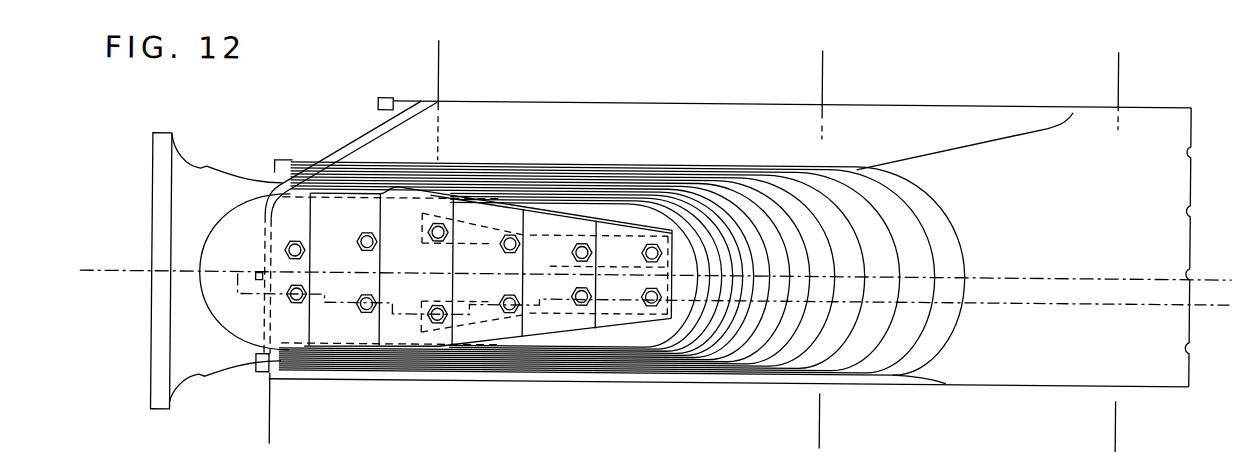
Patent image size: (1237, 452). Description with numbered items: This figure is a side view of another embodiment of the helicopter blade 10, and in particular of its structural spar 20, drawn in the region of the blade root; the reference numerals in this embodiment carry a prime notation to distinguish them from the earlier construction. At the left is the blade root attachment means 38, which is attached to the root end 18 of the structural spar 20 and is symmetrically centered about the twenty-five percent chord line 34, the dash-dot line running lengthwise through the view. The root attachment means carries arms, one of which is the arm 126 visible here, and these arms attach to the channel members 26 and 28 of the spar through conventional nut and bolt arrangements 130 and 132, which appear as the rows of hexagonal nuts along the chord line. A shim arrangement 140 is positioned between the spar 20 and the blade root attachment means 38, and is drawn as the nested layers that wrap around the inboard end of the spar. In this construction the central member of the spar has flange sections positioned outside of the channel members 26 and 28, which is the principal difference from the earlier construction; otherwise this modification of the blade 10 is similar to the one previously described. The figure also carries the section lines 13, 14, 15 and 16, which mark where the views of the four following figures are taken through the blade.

The helicopter blade 10 is at (890, 86).
The root end of structural spar 18 is at (402, 130).
The structural spar 20 is at (962, 115).
The channel member 26 is at (532, 111).
The channel member 28 is at (1010, 368).
The 25% chord line 34 is at (392, 270).
The blade root attachment means 38 is at (157, 184).
The arm 126 is at (423, 208).
The nut and bolt arrangement 130 is at (452, 238).
The nut and bolt arrangement 132 is at (520, 246).
The shim arrangement 140 is at (940, 222).
The section line 13— 13 is at (109, 279).
The section line 14— 14 is at (433, 65).
The section line 15— 15 is at (818, 66).
The section line 16— 16 is at (1114, 67).